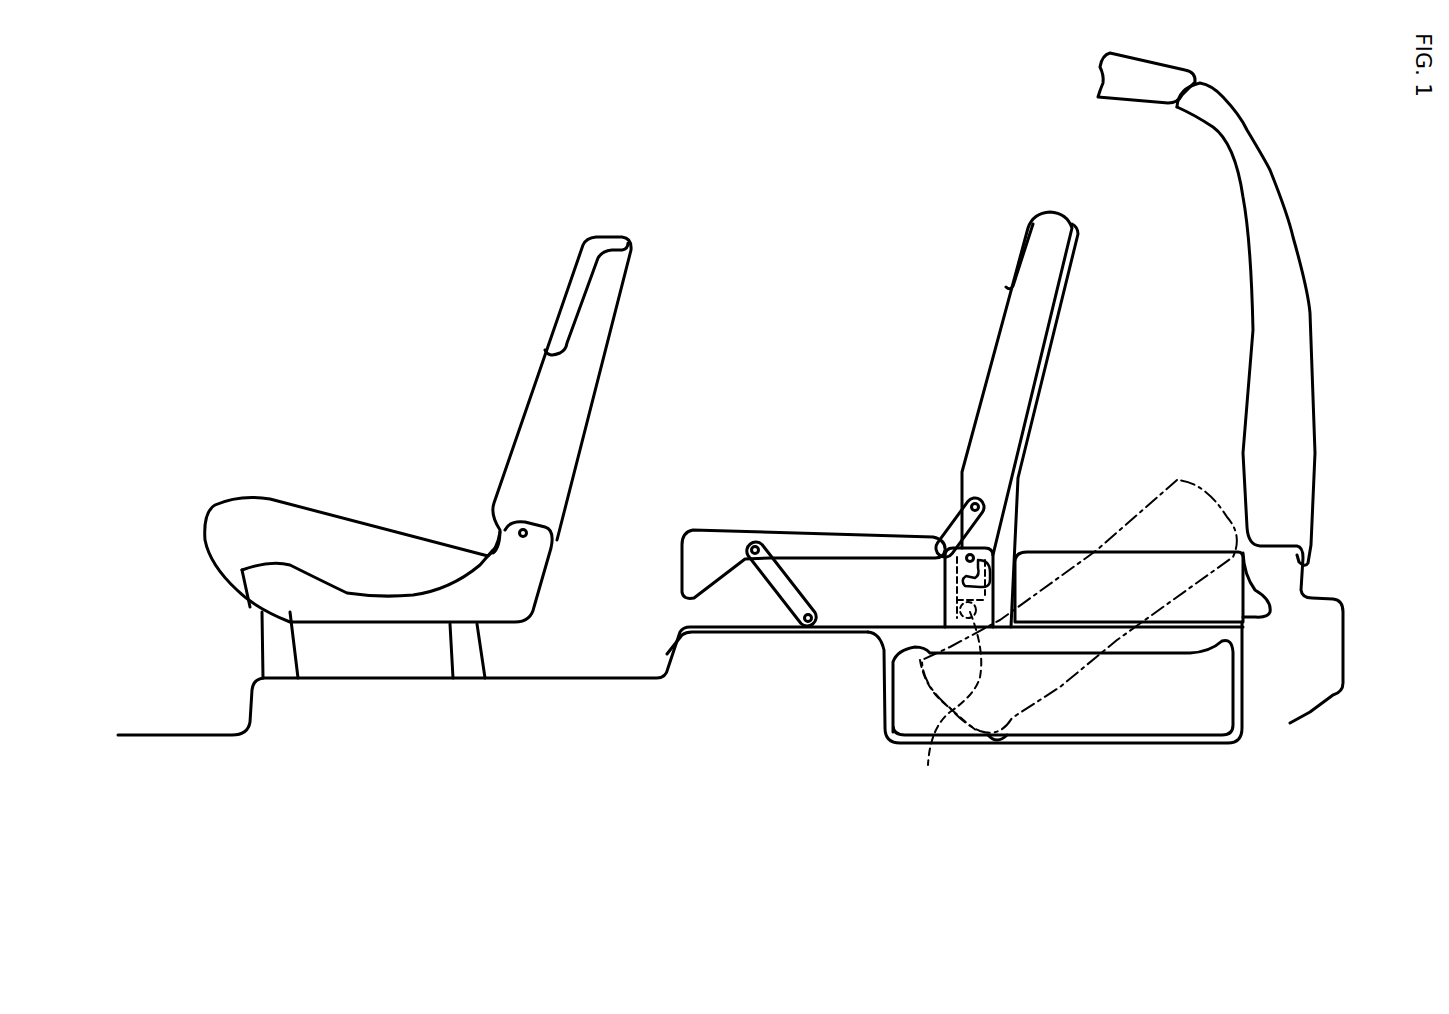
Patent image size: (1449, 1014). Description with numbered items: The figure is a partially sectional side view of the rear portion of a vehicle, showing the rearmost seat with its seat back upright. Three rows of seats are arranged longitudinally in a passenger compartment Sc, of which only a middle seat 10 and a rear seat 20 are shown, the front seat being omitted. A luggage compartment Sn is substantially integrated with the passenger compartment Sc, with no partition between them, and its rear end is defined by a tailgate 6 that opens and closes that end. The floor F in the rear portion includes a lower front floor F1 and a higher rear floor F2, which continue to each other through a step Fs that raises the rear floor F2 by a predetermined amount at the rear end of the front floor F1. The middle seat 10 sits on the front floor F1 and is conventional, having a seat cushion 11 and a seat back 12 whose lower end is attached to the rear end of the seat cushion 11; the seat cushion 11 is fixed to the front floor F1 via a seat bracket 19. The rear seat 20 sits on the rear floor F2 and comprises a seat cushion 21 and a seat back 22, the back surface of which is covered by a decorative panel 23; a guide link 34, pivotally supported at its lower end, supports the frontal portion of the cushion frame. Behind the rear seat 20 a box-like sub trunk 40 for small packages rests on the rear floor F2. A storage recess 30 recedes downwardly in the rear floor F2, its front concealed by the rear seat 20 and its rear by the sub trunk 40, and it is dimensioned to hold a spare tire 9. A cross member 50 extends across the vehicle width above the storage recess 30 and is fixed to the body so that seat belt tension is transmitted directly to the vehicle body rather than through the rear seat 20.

The tailgate 6 is at (1300, 247).
The spare tire 9 is at (1107, 630).
The middle seat 10 is at (443, 451).
The seat cushion 11 is at (375, 517).
The seat back 12 is at (611, 353).
The seat bracket 19 is at (450, 653).
The rear seat 20 is at (910, 409).
The seat cushion 21 is at (857, 530).
The seat back 22 is at (990, 356).
The decorative panel 23 is at (1058, 318).
The storage recess 30 is at (1050, 735).
The guide link 34 is at (768, 603).
The sub trunk 40 is at (1078, 547).
The cross member 50 is at (949, 706).
The floor F is at (680, 684).
The front floor F1 is at (513, 664).
The rear floor F2 is at (753, 630).
The step Fs is at (670, 655).
The passenger compartment Sc is at (742, 208).
The luggage compartment Sn is at (1182, 224).